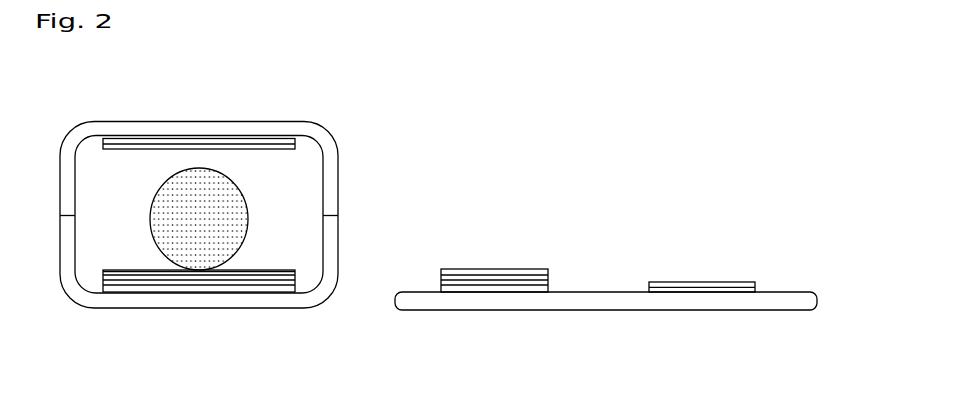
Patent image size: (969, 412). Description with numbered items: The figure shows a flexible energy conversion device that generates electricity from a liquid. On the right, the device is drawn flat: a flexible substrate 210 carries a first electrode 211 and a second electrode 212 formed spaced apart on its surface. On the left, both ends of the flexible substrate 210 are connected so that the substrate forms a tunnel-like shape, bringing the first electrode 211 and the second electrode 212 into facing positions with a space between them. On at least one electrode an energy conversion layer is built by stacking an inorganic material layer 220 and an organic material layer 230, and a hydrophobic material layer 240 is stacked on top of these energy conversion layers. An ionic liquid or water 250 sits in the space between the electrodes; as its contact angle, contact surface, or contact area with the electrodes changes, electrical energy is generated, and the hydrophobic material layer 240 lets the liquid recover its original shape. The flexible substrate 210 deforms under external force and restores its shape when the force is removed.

The flexible substrate 210 is at (303, 302).
The first electrode 211 is at (248, 290).
The second electrode 212 is at (137, 138).
The inorganic material layer 220 is at (202, 285).
The organic material layer 230 is at (156, 280).
The hydrophobic material layer 240 is at (175, 145).
The ionic liquid or water 250 is at (228, 172).